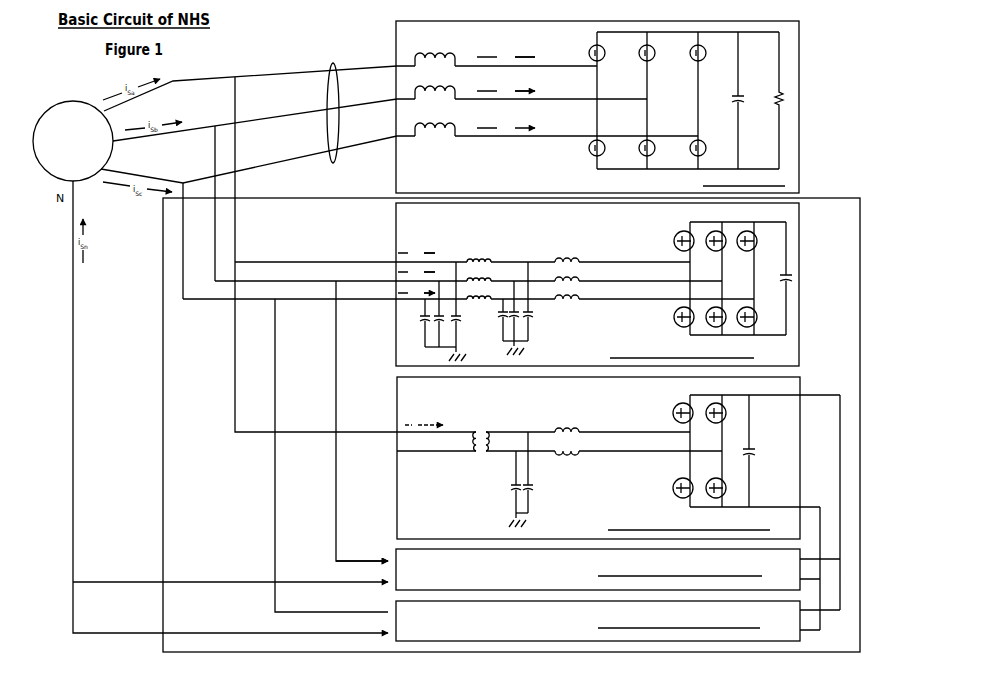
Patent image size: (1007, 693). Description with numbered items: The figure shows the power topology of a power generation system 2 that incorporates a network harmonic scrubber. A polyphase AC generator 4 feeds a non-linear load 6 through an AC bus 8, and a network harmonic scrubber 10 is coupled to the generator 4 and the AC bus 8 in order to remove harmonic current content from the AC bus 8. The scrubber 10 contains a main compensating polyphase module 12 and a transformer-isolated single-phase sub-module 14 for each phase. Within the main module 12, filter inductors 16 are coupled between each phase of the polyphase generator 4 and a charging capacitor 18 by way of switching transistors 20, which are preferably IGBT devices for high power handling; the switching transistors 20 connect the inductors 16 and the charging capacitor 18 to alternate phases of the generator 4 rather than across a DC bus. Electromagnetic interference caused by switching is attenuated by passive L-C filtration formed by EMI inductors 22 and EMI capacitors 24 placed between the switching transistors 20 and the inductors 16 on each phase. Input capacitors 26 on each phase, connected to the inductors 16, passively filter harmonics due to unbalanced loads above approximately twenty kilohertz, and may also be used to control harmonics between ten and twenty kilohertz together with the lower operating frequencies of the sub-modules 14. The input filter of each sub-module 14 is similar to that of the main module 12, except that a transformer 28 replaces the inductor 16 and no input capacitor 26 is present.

The power generation system 2 is at (607, 107).
The polyphase AC generator 4 is at (58, 102).
The non-linear load 6 is at (396, 163).
The AC bus 8 is at (328, 103).
The network harmonic scrubber 10 is at (165, 327).
The main compensating polyphase module 12 is at (397, 326).
The transformer-isolated single-phase sub-module 14 is at (397, 484).
The filter inductor 16 is at (492, 259).
The charging capacitor 18 is at (786, 246).
The switching transistor 20 is at (674, 243).
The EMI inductor 22 is at (580, 258).
The EMI capacitor 24 is at (530, 328).
The input capacitor 26 is at (439, 347).
The transformer 28 is at (478, 454).